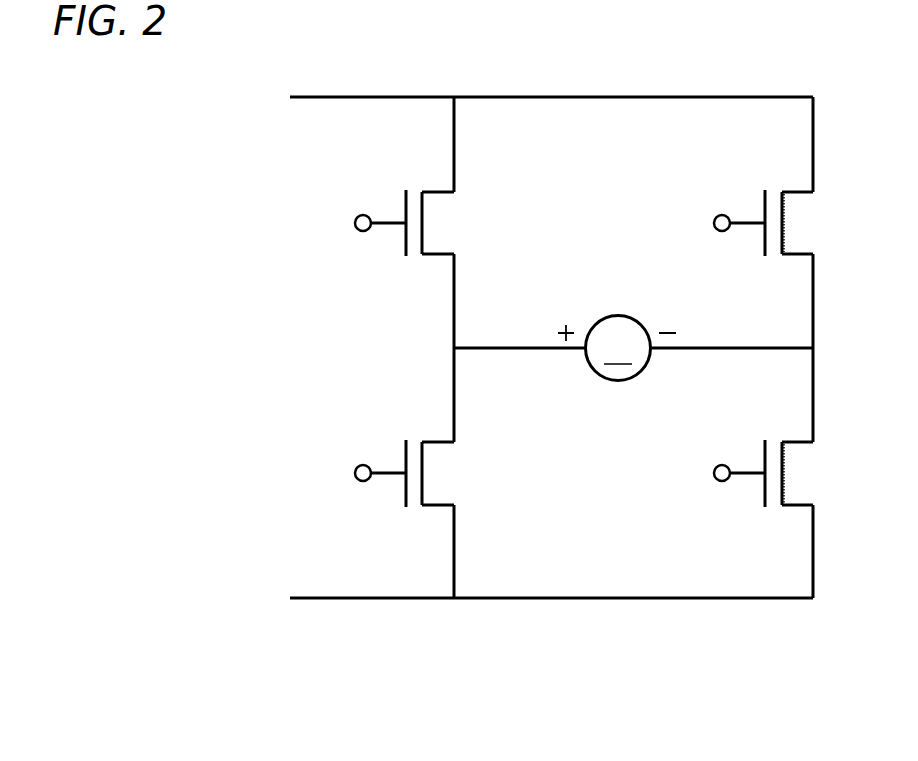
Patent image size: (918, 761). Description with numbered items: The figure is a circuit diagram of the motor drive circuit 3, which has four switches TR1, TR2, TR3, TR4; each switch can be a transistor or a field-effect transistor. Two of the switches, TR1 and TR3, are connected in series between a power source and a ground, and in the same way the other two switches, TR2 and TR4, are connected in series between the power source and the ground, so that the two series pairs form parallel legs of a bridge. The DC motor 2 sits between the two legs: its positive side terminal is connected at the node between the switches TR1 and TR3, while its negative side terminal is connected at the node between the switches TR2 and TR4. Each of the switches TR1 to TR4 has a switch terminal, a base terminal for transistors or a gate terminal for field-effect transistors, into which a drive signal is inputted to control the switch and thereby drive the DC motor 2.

The DC motor 2 is at (618, 381).
The motor drive circuit 3 is at (469, 411).
The switch TR1 is at (375, 218).
The switch TR2 is at (734, 218).
The switch TR3 is at (375, 469).
The switch TR4 is at (734, 469).